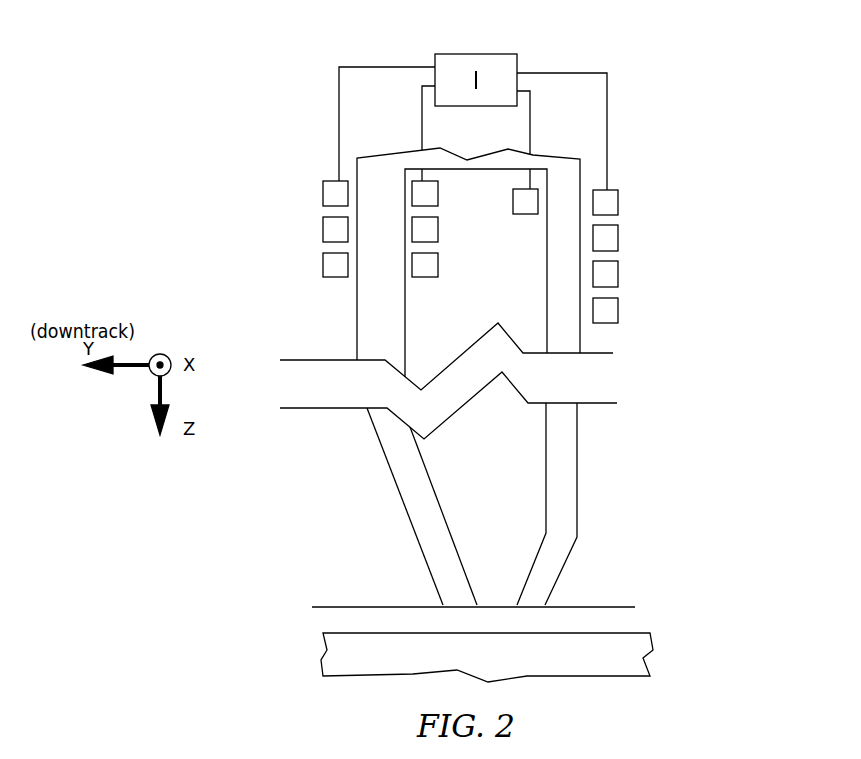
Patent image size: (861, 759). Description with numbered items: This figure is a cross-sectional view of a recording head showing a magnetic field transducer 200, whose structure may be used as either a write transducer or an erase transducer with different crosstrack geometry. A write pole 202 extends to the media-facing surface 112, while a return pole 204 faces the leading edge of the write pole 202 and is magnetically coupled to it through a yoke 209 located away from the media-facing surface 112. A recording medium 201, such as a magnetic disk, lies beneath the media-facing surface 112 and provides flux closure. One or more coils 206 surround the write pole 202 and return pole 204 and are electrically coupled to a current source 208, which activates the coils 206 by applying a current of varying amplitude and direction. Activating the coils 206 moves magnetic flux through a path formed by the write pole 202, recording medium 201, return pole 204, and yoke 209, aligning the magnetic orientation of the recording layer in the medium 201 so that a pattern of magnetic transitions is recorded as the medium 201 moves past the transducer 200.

The magnetic field transducer 200 is at (714, 178).
The current source 208 is at (507, 55).
The coils 206 is at (328, 182).
The yoke 209 is at (468, 173).
The return pole 204 is at (432, 555).
The write pole 202 is at (542, 595).
The media-facing surface 112 is at (632, 607).
The recording medium 201 is at (323, 650).